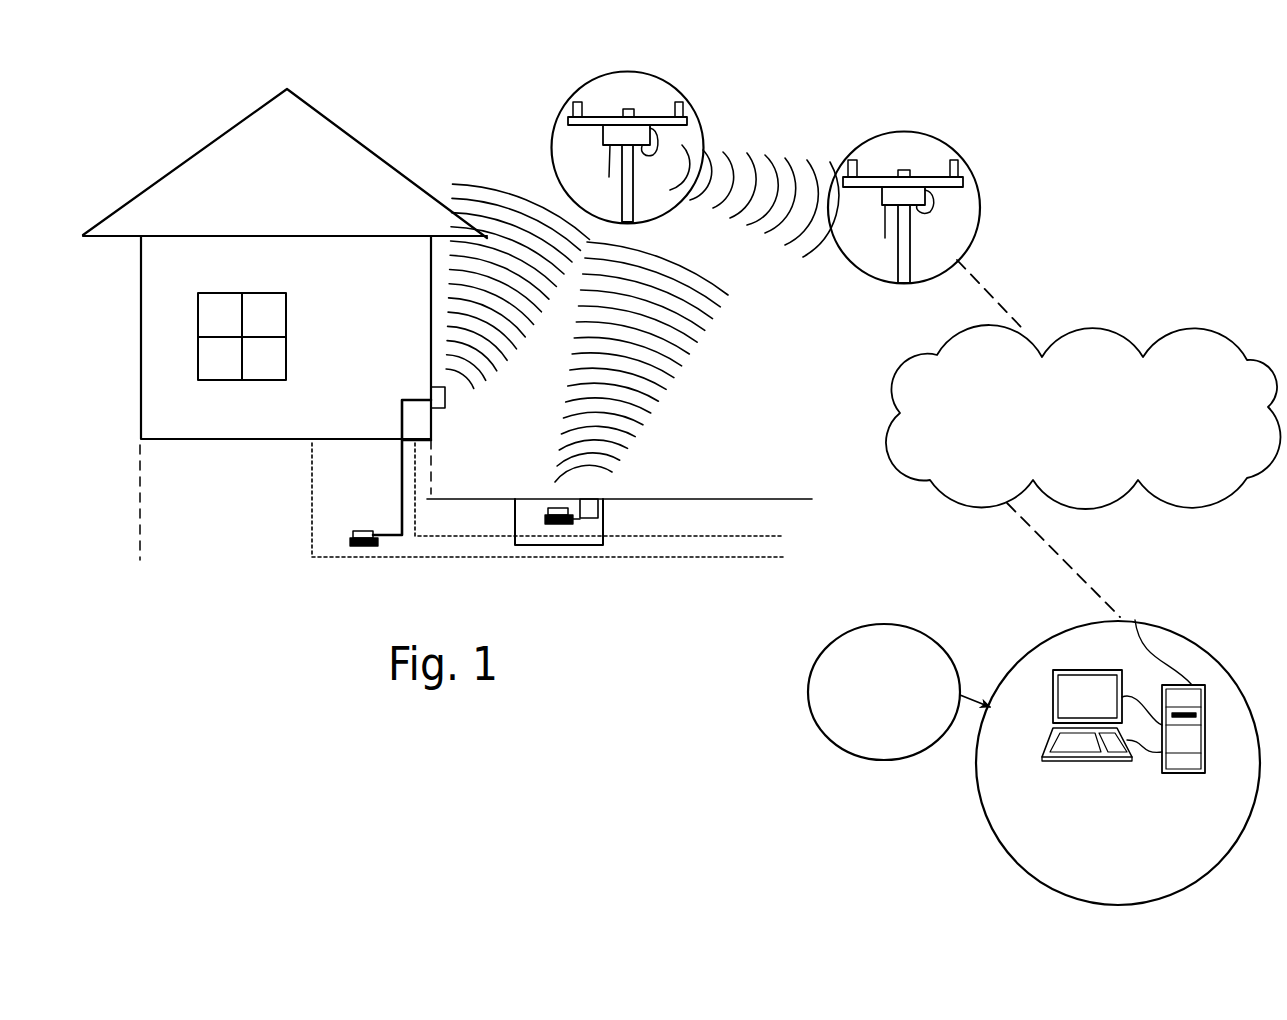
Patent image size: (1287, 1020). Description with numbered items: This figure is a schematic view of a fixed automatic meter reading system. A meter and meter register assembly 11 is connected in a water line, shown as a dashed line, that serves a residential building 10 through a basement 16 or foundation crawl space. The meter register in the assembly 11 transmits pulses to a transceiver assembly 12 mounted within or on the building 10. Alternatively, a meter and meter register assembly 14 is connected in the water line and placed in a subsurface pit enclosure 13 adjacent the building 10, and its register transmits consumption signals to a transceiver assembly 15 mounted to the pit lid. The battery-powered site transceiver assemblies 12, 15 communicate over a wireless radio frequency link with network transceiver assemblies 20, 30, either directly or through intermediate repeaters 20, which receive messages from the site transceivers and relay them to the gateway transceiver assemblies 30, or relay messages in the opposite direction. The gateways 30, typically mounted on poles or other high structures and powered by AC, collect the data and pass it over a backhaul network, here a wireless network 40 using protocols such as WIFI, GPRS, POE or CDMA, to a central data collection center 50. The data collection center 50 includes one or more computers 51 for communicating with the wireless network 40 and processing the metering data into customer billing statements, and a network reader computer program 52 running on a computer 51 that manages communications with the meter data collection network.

The residential building 10 is at (135, 367).
The meter and meter register assembly 11 is at (365, 547).
The transceiver assembly 12 is at (444, 407).
The subsurface pit enclosure 13 is at (605, 522).
The meter and meter register assembly 14 is at (560, 525).
The transceiver assembly 15 is at (600, 499).
The basement 16 is at (228, 539).
The repeater transceiver assembly 20 is at (710, 88).
The gateway transceiver assembly 30 is at (1002, 165).
The wireless network 40 is at (981, 441).
The data collection center 50 is at (1215, 664).
The computer 51 is at (1038, 768).
The network reader computer program 52 is at (835, 745).